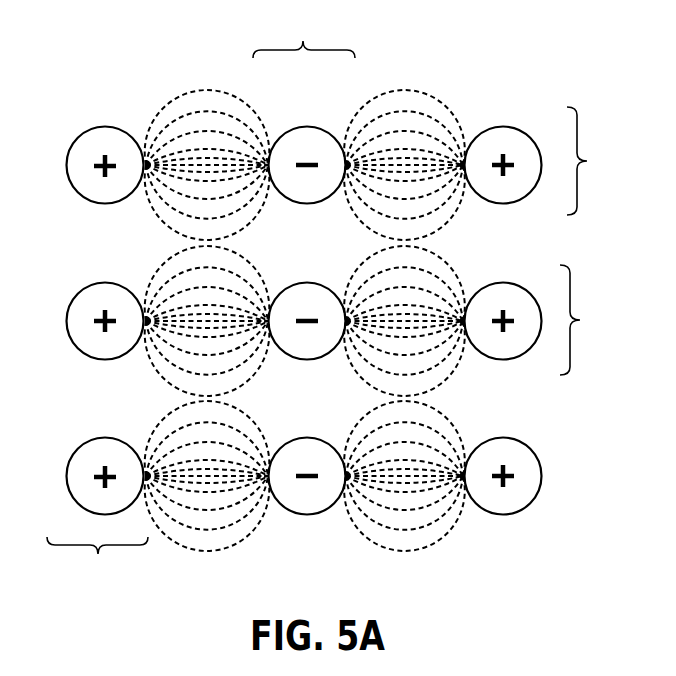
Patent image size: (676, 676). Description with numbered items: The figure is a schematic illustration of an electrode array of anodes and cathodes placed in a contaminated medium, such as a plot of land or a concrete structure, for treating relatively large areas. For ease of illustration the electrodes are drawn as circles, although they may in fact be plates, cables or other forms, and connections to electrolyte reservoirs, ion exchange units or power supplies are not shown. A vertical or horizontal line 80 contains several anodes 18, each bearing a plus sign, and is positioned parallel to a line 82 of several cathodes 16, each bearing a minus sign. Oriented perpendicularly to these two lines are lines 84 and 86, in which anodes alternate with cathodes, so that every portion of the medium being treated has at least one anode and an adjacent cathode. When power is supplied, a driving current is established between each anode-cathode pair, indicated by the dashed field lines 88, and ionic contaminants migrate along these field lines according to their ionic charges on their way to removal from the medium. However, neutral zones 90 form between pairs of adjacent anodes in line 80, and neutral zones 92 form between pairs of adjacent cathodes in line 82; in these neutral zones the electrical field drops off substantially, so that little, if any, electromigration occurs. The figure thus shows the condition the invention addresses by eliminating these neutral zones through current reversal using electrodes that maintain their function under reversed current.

The cathode 16 is at (98, 127).
The anode 18 is at (288, 128).
The line of anodes 80 is at (97, 565).
The line of cathodes 82 is at (304, 31).
The line of alternating anodes and cathodes 84 is at (598, 161).
The line of alternating anodes and cathodes 86 is at (592, 320).
The field lines 88 is at (148, 425).
The neutral zone 90 is at (150, 234).
The neutral zone 92 is at (322, 404).